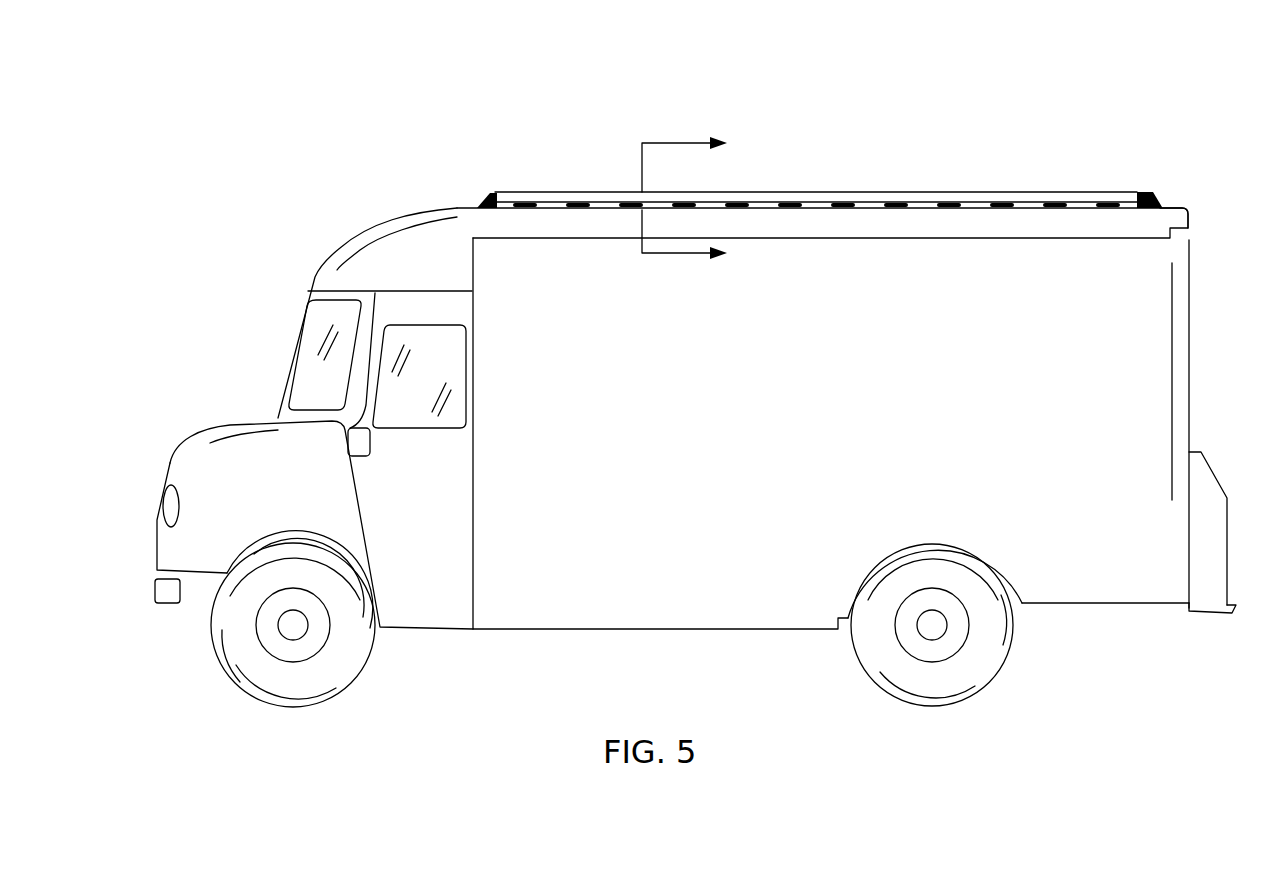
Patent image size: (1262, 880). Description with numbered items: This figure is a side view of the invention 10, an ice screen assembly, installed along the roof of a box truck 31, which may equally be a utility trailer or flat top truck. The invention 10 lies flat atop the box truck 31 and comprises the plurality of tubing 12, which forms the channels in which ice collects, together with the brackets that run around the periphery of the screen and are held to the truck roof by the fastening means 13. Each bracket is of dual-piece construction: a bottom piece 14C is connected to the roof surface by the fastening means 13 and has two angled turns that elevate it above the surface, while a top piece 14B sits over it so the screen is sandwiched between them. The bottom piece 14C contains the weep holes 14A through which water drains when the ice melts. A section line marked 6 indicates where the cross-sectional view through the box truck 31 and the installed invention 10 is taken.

The ice screen 10 is at (275, 212).
The box truck 31 is at (403, 230).
The tubing 12 is at (510, 194).
The fastening means 13 is at (557, 191).
The weep holes 14A is at (843, 205).
The top piece 14B is at (1161, 206).
The bottom piece 14C is at (1156, 195).
The section line 6- 6 is at (700, 199).